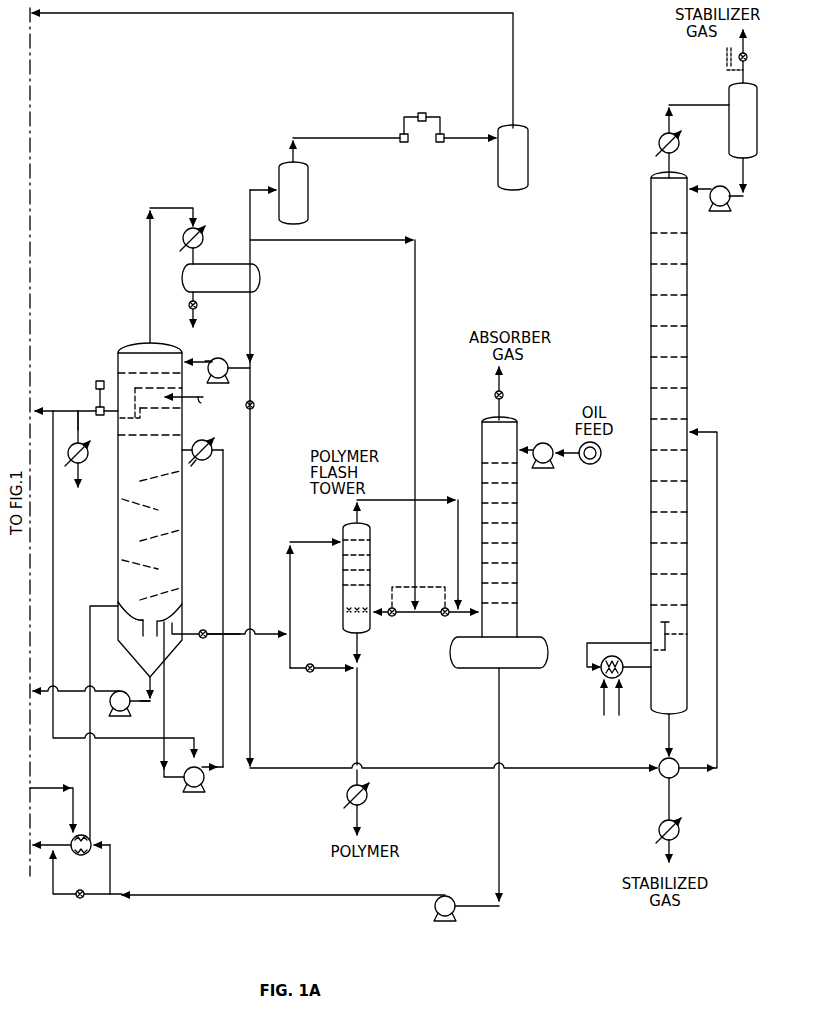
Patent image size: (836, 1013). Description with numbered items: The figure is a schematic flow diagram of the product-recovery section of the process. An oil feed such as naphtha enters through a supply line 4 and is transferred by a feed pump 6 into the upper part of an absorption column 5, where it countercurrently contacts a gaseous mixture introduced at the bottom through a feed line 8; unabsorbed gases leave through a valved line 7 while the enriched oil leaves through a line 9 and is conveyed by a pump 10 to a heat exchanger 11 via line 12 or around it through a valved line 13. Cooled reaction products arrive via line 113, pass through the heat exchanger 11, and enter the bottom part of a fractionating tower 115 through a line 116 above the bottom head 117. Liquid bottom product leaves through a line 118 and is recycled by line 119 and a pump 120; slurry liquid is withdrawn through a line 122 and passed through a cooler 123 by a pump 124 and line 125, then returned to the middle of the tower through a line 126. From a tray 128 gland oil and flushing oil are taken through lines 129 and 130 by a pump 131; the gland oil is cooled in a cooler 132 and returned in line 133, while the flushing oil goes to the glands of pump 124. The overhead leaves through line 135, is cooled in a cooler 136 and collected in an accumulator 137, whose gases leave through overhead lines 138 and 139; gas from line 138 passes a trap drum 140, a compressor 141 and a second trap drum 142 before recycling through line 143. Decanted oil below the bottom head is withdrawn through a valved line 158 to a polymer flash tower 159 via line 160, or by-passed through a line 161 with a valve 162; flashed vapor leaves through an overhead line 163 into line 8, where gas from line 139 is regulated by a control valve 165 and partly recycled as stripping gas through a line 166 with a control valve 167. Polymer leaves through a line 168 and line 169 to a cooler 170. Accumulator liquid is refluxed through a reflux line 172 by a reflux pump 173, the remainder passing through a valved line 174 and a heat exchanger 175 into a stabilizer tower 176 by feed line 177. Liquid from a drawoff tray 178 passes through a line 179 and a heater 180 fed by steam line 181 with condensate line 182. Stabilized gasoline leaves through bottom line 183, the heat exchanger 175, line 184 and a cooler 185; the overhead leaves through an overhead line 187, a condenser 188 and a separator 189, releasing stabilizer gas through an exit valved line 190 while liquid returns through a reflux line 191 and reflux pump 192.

The supply line 4 is at (594, 465).
The absorption column 5 is at (517, 548).
The feed pump 6 is at (545, 468).
The valved line 7 is at (499, 410).
The feed line 8 is at (462, 607).
The line 9 is at (499, 831).
The pump 10 is at (447, 921).
The heat exchanger 11 is at (86, 855).
The line 12 is at (110, 861).
The valved line 13 is at (100, 894).
The line 113 is at (51, 788).
The fractionating tower 115 is at (118, 555).
The line 116 is at (90, 606).
The bottom head 117 is at (130, 610).
The line 118 is at (144, 706).
The line 119 is at (70, 691).
The pump 120 is at (121, 691).
The line 122 is at (164, 705).
The cooler 123 is at (200, 477).
The pump 124 is at (200, 792).
The line 125 is at (223, 541).
The line 126 is at (212, 436).
The tray 128 is at (125, 410).
The line 129 is at (80, 422).
The line 130 is at (53, 533).
The pump 131 is at (95, 407).
The cooler 132 is at (86, 463).
The line 133 is at (195, 405).
The line 135 is at (150, 266).
The cooler 136 is at (203, 243).
The accumulator 137 is at (260, 290).
The overhead line 138 is at (258, 189).
The overhead line 139 is at (413, 335).
The trap drum 140 is at (308, 190).
The compressor 141 is at (421, 116).
The second trap drum 142 is at (528, 160).
The line 143 is at (228, 13).
The valved line 158 is at (192, 632).
The polymer flash tower 159 is at (370, 548).
The line 160 is at (290, 588).
The line 161 is at (288, 646).
The valve 162 is at (310, 672).
The overhead line 163 is at (428, 500).
The control valve 165 is at (445, 618).
The line 166 is at (396, 618).
The control valve 167 is at (390, 605).
The line 168 is at (357, 650).
The line 169 is at (357, 710).
The cooler 170 is at (348, 791).
The reflux line 172 is at (206, 357).
The reflux pump 173 is at (222, 360).
The valved line 174 is at (250, 478).
The heat exchanger 175 is at (661, 775).
The stabilizer tower 176 is at (687, 340).
The feed line 177 is at (717, 578).
The drawoff tray 178 is at (665, 622).
The line 179 is at (617, 643).
The heater 180 is at (601, 674).
The line 181 is at (602, 706).
The line 182 is at (620, 706).
The bottom line 183 is at (669, 733).
The line 184 is at (669, 795).
The cooler 185 is at (679, 835).
The overhead line 187 is at (662, 165).
The condenser 188 is at (661, 134).
The separator 189 is at (757, 126).
The exit valved line 190 is at (743, 70).
The reflux line 191 is at (743, 174).
The reflux pump 192 is at (724, 213).